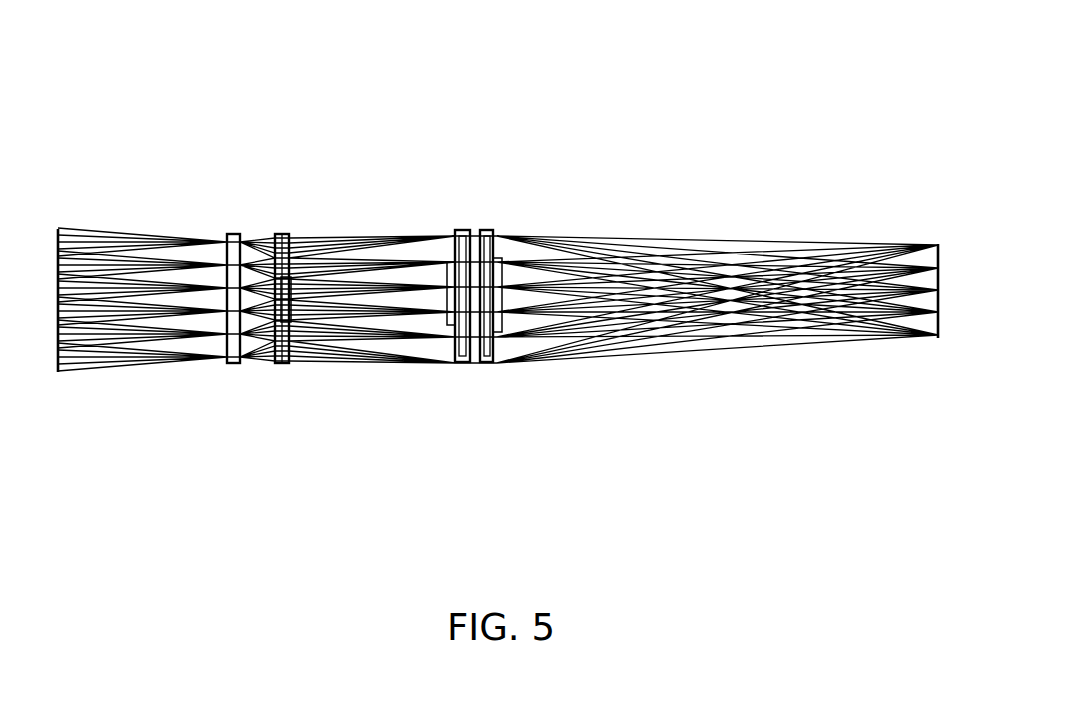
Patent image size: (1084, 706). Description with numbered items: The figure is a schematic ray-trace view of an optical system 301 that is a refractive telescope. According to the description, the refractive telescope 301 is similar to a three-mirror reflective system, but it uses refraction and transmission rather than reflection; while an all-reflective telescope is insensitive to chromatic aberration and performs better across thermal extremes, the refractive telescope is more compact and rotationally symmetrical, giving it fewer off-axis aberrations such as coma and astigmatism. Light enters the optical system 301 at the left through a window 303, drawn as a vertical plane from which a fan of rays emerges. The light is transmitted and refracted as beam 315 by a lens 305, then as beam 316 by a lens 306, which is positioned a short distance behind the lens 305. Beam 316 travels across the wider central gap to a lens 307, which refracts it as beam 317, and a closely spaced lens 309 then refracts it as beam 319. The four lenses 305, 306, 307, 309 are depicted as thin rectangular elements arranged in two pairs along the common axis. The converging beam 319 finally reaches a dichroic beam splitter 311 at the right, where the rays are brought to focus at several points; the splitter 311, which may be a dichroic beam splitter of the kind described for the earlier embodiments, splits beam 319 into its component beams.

The optical system 301 is at (767, 77).
The window 303 is at (58, 373).
The lens 305 is at (234, 365).
The lens 306 is at (282, 365).
The lens 307 is at (463, 362).
The lens 309 is at (485, 362).
The dichroic beam splitter 311 is at (938, 338).
The beam 315 is at (255, 237).
The beam 316 is at (385, 232).
The beam 317 is at (474, 235).
The beam 319 is at (657, 235).